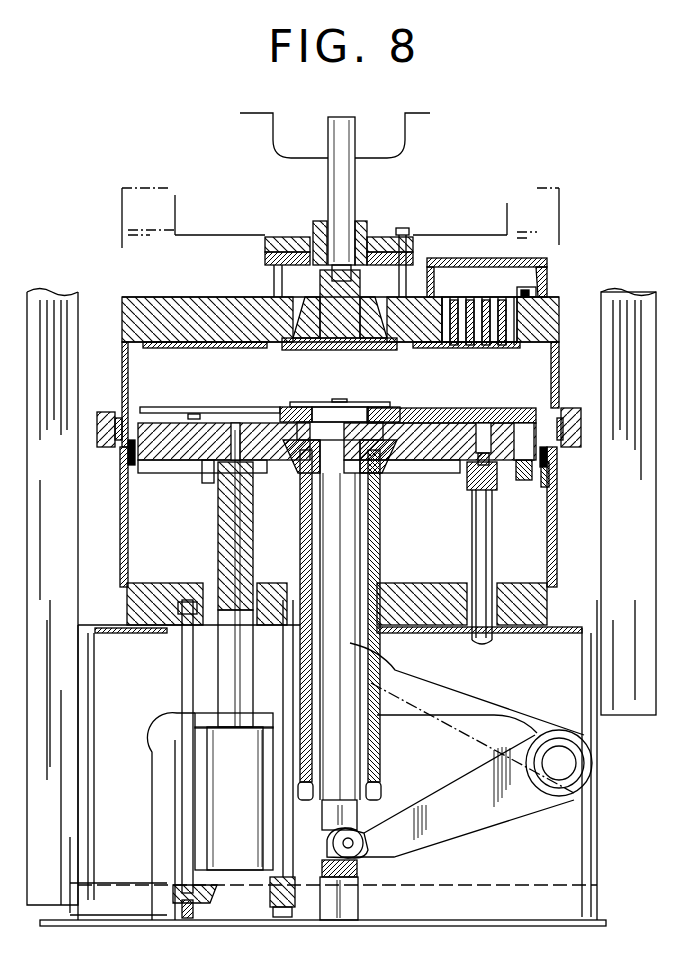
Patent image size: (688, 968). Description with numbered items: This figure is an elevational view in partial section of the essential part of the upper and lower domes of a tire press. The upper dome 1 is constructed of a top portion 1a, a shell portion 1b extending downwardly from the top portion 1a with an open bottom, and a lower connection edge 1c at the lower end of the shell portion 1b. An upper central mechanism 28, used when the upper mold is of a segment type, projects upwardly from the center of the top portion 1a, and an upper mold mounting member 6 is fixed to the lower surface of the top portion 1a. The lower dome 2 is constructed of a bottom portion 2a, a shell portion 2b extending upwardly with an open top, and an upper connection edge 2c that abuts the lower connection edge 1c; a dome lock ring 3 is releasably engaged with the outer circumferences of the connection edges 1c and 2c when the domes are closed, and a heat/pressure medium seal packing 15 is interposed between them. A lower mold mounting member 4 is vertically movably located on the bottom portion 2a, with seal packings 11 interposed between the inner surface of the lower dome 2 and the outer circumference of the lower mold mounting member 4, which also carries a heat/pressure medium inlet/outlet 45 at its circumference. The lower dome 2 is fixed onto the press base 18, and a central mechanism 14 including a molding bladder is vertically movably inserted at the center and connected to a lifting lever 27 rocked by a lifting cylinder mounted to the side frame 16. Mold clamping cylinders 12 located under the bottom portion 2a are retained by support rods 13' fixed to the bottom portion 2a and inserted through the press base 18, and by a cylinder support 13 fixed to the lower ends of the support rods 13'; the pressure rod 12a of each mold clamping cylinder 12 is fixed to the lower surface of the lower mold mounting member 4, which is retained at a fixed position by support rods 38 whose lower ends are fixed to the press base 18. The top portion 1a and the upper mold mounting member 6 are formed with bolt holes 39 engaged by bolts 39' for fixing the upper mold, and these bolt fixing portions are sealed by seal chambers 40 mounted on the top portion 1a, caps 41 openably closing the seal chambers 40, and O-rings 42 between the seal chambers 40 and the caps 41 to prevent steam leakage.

The upper dome 1 is at (133, 297).
The top portion 1a is at (178, 310).
The shell portion 1b is at (123, 362).
The lower connection edge 1c is at (118, 410).
The lower dome 2 is at (556, 566).
The bottom portion 2a is at (160, 610).
The shell portion 2b is at (120, 533).
The upper connection edge 2c is at (105, 440).
The dome lock ring 3 is at (566, 408).
The lower mold mounting member 4 is at (500, 408).
The upper mold mounting member 6 is at (240, 355).
The heat/pressure medium seal packings 11 is at (126, 458).
The mold clamping cylinder 12 is at (247, 860).
The pressure rod 12a is at (222, 557).
The cylinder support 13 is at (213, 691).
The support rods 13' is at (213, 776).
The central mechanism 14 is at (380, 765).
The heat/pressure medium seal packing 15 is at (552, 455).
The side frame 16 is at (36, 298).
The press base 18 is at (448, 632).
The lifting lever 27 is at (473, 818).
The upper central mechanism 28 is at (327, 200).
The support rods 38 is at (472, 521).
The bolt holes 39 is at (466, 345).
The bolts 39' is at (554, 285).
The seal chambers 40 is at (543, 288).
The caps 41 is at (476, 262).
The O-rings 42 is at (430, 262).
The heat/pressure medium inlet/outlet 45 is at (525, 472).